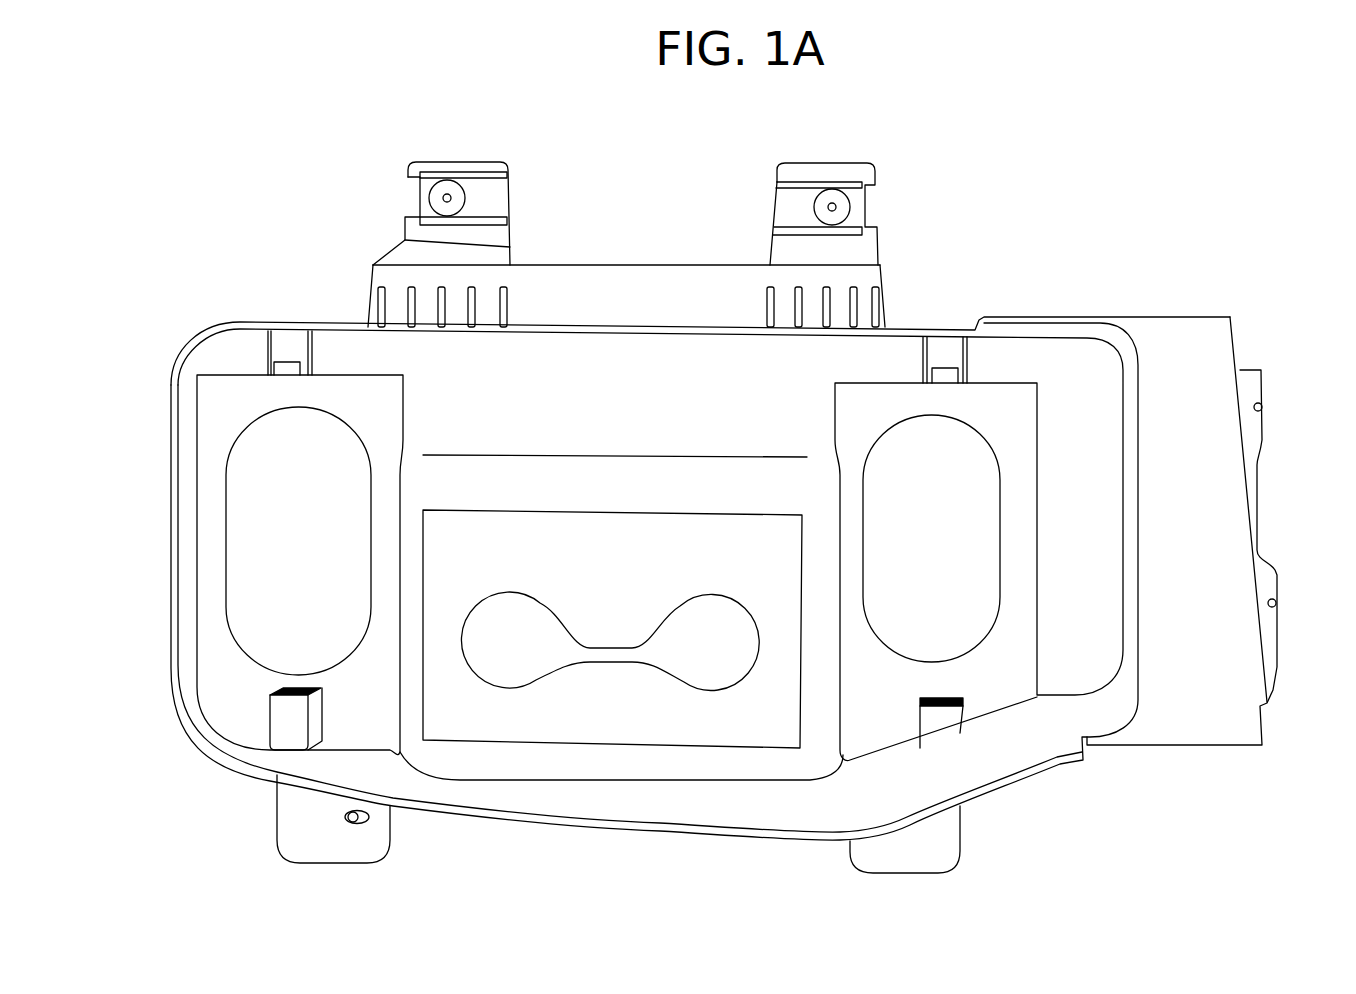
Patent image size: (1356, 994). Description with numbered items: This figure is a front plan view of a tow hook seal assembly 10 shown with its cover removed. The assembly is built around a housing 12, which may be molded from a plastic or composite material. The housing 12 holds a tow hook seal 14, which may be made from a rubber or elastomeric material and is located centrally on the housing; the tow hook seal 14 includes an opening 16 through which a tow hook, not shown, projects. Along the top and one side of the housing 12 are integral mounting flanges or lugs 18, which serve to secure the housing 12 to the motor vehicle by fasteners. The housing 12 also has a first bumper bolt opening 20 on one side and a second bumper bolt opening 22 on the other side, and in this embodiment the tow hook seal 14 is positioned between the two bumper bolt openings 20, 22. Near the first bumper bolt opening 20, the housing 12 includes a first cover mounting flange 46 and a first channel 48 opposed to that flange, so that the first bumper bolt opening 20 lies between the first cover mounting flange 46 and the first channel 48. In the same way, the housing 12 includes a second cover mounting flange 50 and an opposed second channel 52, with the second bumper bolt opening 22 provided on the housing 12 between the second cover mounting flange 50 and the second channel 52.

The tow hook seal assembly 10 is at (1085, 205).
The housing 12 is at (983, 762).
The tow hook seal 14 is at (588, 705).
The opening 16 is at (690, 657).
The mounting flanges or lugs 18 is at (617, 302).
The first bumper bolt opening 20 is at (216, 585).
The second bumper bolt opening 22 is at (993, 662).
The first cover mounting flange 46 is at (288, 362).
The first channel 48 is at (285, 700).
The second cover mounting flange 50 is at (947, 367).
The second channel 52 is at (934, 708).